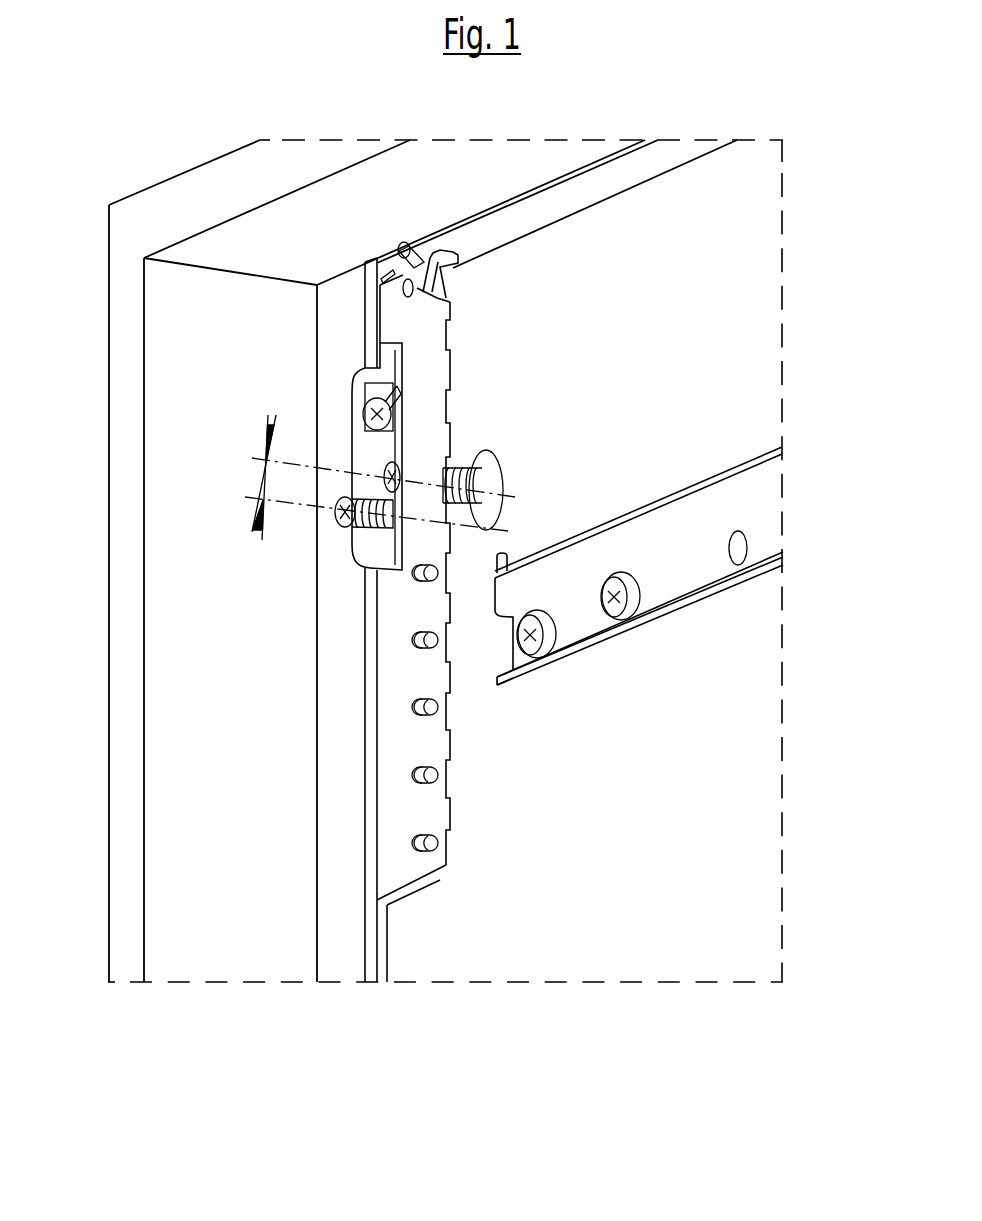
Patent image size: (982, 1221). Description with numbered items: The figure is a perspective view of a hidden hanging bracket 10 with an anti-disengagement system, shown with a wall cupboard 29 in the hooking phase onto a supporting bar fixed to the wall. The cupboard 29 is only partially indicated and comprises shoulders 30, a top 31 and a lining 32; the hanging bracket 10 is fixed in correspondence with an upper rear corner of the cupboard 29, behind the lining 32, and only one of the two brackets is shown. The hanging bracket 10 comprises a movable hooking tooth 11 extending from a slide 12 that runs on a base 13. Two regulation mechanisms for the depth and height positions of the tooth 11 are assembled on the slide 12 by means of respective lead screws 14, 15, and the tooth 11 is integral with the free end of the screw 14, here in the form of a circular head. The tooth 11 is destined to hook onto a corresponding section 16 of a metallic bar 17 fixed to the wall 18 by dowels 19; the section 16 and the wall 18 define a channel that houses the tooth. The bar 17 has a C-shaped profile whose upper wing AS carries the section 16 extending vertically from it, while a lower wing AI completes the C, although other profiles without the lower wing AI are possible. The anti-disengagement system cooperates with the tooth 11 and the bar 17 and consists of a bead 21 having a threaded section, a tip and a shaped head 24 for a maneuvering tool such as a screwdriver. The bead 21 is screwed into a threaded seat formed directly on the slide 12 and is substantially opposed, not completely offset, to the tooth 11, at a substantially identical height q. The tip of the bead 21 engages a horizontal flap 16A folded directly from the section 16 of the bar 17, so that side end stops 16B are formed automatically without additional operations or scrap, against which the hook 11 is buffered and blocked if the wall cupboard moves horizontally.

The wall cupboard 29 is at (192, 168).
The top 31 is at (201, 216).
The shoulders 30 is at (192, 765).
The wall 18 is at (650, 274).
The base 13 is at (412, 756).
The lead screw 15 is at (367, 424).
The slide 12 is at (385, 453).
The lead screw 14 is at (388, 472).
The shaped head 24 is at (338, 512).
The bead 21 is at (358, 527).
The hooking tooth 11 is at (483, 452).
The height q is at (378, 477).
The section 16 is at (672, 520).
The horizontal flap 16A is at (620, 517).
The side end stops 16B is at (508, 553).
The metallic bar 17 is at (673, 622).
The dowels 19 is at (530, 643).
The upper wing AS is at (760, 500).
The lower wing AI is at (747, 580).
The hanging bracket 10 is at (478, 848).
The lining 32 is at (372, 947).